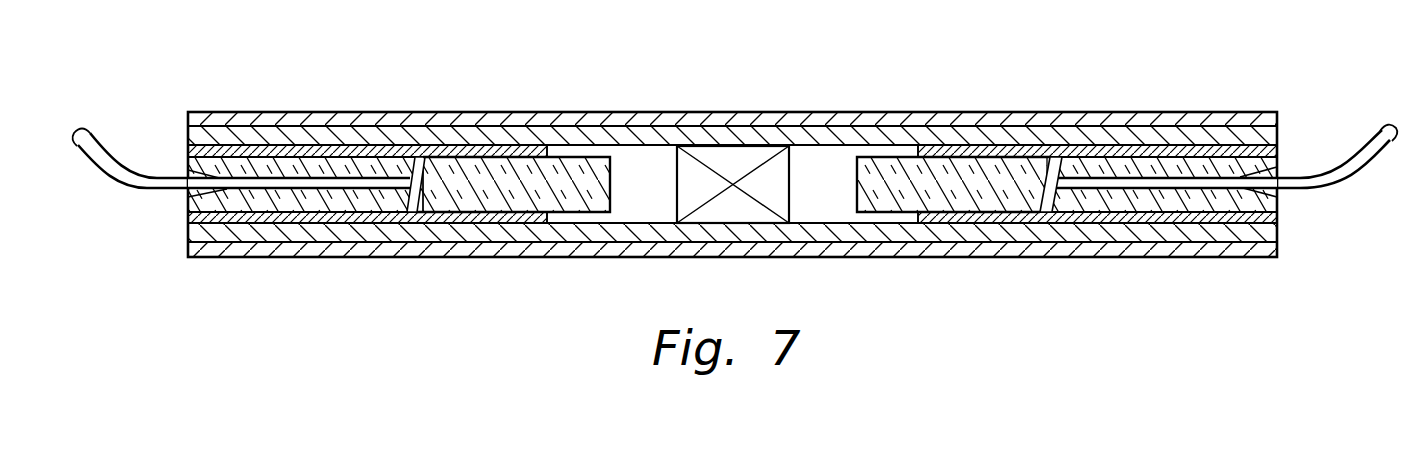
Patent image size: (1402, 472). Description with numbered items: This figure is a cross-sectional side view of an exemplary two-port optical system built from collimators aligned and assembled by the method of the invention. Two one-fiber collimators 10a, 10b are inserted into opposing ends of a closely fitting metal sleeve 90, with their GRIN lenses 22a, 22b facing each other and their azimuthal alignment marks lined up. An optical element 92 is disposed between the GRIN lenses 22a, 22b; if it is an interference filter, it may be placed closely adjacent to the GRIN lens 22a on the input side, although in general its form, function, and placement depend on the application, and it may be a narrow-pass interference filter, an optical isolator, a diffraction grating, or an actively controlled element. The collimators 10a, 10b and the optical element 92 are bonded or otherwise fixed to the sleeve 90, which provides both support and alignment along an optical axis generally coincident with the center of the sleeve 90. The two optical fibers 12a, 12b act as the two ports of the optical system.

The one-fiber collimator 10a is at (272, 167).
The one-fiber collimator 10b is at (1117, 167).
The optical fiber 12a is at (112, 158).
The optical fiber 12b is at (1353, 160).
The GRIN lens 22a is at (519, 167).
The GRIN lens 22b is at (872, 167).
The metal sleeve 90 is at (657, 125).
The optical element 92 is at (733, 160).